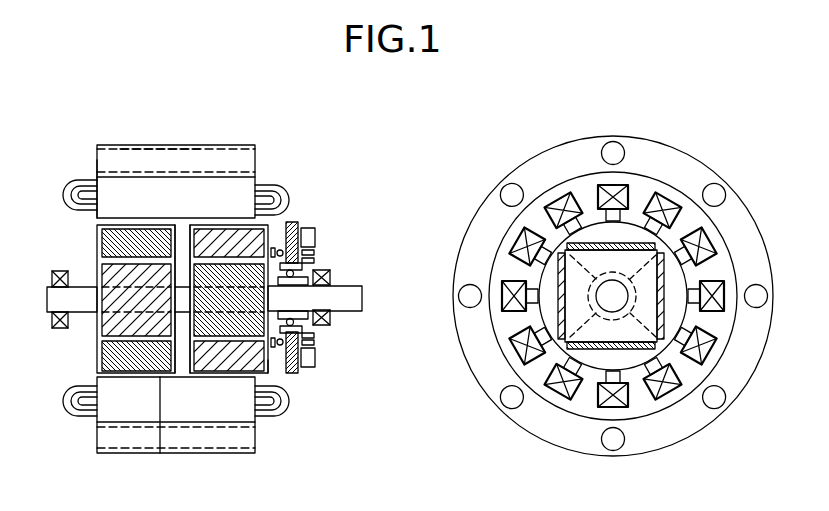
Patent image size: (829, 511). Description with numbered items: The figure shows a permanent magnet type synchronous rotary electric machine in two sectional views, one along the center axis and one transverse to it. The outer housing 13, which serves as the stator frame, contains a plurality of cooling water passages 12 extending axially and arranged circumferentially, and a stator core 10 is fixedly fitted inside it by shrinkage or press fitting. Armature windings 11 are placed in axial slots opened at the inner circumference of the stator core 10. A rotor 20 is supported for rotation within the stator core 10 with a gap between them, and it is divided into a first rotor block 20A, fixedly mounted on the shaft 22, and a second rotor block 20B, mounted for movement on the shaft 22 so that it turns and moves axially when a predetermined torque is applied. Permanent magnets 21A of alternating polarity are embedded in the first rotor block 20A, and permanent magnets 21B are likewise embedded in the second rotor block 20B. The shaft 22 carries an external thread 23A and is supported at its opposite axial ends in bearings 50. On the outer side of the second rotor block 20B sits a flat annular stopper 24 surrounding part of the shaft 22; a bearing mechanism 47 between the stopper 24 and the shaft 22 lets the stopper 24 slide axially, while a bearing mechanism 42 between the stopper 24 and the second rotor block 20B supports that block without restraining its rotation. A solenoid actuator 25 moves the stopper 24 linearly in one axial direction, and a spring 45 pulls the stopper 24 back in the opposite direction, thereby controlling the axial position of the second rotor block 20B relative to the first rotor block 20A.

The stator core 10 is at (108, 172).
The armature windings 11 is at (70, 192).
The cooling water passages 12 is at (135, 148).
The housing 13 is at (236, 145).
The rotor 20 is at (672, 243).
The first rotor block 20A is at (102, 454).
The second rotor block 20B is at (230, 454).
The permanent magnets 21A is at (160, 454).
The permanent magnets 21B is at (266, 372).
The shaft 22 is at (356, 312).
The external thread 23A is at (197, 222).
The stopper 24 is at (306, 228).
The actuator 25 is at (318, 249).
The bearing mechanism 42 is at (292, 222).
The spring 45 is at (317, 260).
The bearing mechanism 47 is at (303, 268).
The bearings 50 is at (62, 330).